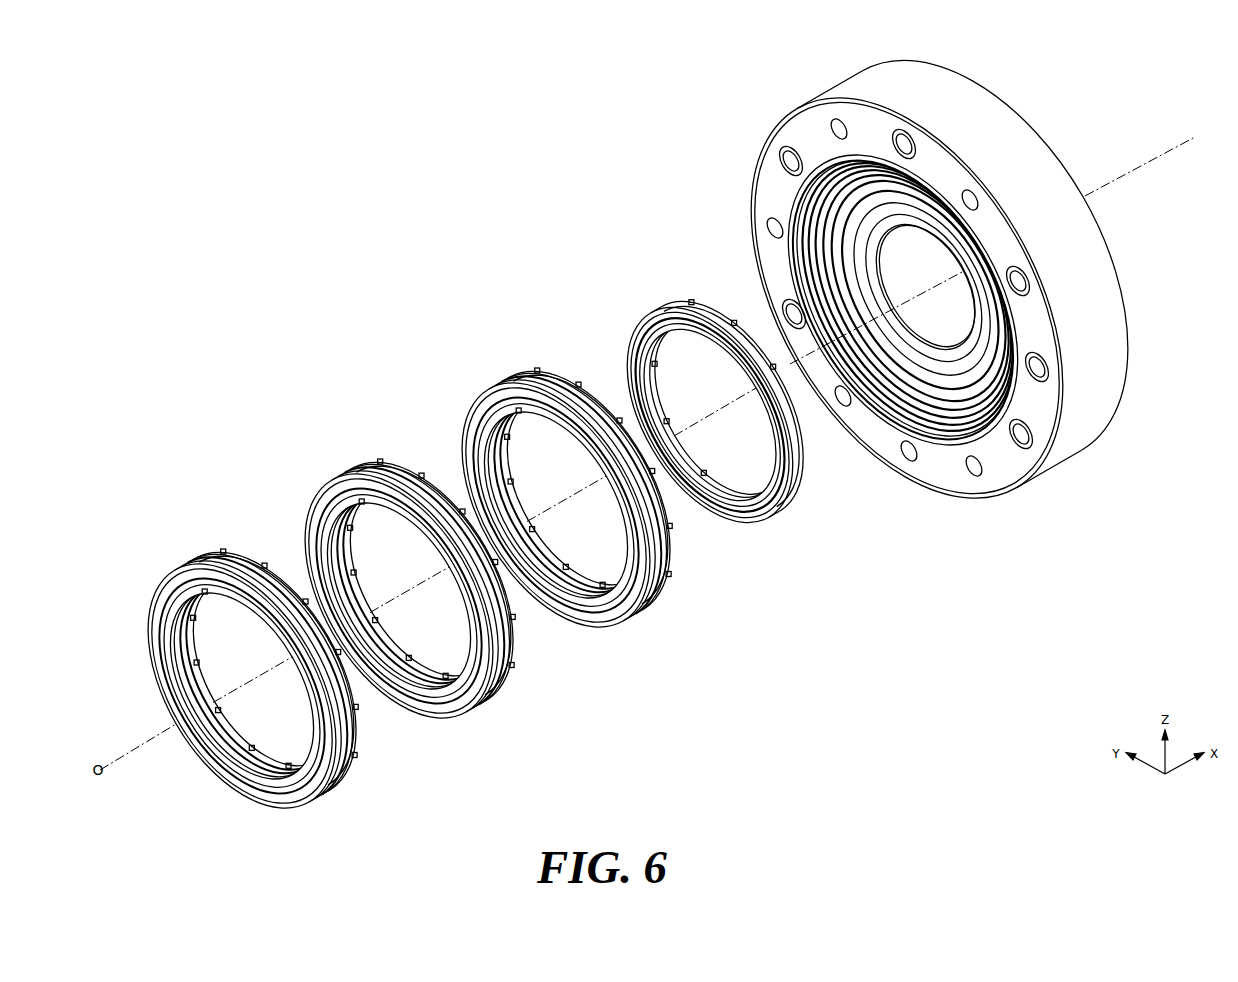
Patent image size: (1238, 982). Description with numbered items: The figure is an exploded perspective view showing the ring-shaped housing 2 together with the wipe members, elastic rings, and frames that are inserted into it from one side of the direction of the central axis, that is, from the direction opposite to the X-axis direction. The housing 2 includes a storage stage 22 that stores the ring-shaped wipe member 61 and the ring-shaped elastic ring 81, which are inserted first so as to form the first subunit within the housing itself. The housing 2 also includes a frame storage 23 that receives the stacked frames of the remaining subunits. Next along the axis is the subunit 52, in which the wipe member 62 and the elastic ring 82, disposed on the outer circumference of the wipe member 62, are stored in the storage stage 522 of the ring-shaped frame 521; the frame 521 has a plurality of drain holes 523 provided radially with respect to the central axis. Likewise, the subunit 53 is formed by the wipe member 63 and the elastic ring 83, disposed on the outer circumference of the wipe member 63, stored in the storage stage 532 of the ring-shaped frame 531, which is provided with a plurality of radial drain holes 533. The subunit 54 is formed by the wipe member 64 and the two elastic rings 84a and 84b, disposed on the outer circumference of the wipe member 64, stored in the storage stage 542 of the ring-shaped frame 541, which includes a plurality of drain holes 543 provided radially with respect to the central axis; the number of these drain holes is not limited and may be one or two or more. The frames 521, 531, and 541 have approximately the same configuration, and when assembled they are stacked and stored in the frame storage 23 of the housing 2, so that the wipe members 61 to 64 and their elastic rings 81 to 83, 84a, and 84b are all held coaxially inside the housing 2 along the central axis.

The housing 2 is at (851, 93).
The storage stage 22 is at (965, 350).
The frame storage 23 is at (868, 410).
The subunit 52 is at (484, 336).
The frame 521 is at (546, 375).
The storage stage 522 is at (630, 594).
The drain holes 523 is at (672, 553).
The subunit 53 is at (326, 424).
The frame 531 is at (393, 462).
The storage stage 532 is at (472, 690).
The drain holes 533 is at (517, 645).
The subunit 54 is at (170, 520).
The frame 541 is at (252, 553).
The storage stage 542 is at (311, 786).
The drain holes 543 is at (358, 737).
The elastic ring 81 is at (641, 325).
The elastic ring 82 is at (495, 396).
The elastic ring 83 is at (340, 490).
The elastic ring 84a is at (178, 567).
The elastic ring 84b is at (222, 547).
The wipe member 61 is at (678, 324).
The wipe member 62 is at (523, 412).
The wipe member 63 is at (368, 506).
The wipe member 64 is at (210, 602).